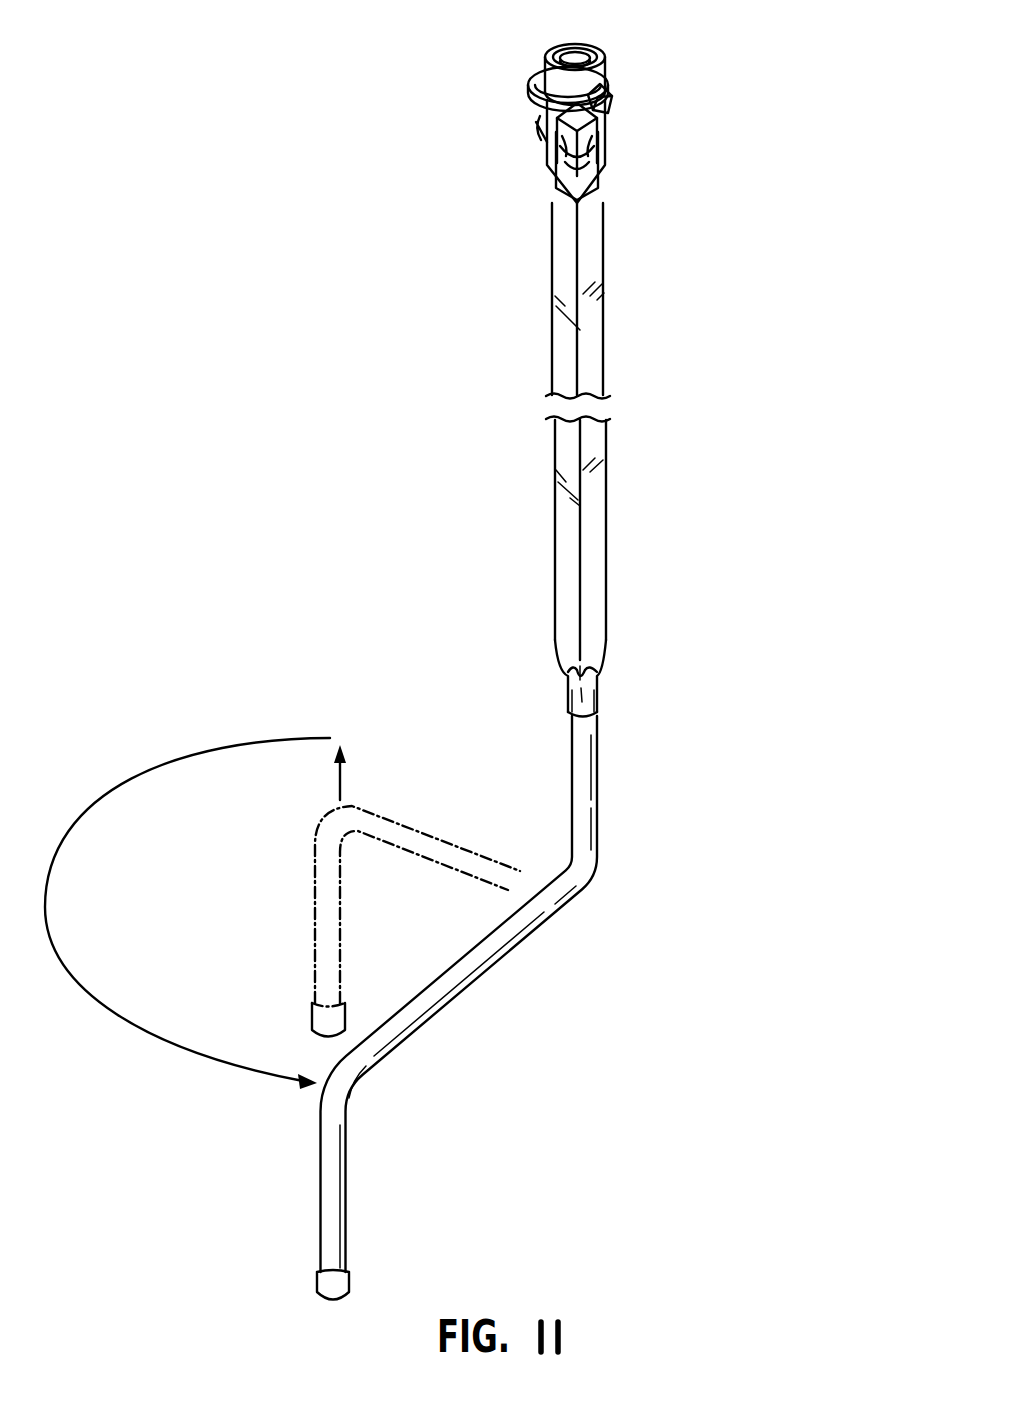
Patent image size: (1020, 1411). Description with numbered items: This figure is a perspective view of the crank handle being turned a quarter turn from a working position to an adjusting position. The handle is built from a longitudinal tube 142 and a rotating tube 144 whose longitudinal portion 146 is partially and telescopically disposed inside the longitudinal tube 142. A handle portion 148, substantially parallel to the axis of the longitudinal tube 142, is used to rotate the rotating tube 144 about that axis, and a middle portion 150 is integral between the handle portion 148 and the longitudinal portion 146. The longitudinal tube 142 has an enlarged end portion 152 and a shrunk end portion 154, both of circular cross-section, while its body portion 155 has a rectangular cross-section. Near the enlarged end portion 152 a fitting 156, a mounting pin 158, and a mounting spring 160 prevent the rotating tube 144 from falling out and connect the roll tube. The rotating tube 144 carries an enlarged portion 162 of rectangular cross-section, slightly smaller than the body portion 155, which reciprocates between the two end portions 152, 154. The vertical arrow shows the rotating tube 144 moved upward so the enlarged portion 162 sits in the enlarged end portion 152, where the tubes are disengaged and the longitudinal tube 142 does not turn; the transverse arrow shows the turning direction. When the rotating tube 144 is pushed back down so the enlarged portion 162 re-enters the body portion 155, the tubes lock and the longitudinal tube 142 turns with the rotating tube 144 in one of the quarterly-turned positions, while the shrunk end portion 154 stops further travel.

The longitudinal tube 142 is at (604, 325).
The rotating tube 144 is at (571, 177).
The longitudinal portion 146 is at (587, 770).
The handle portion 148 is at (334, 1173).
The middle portion 150 is at (432, 998).
The enlarged end portion 152 is at (601, 114).
The shrunk end portion 154 is at (600, 694).
The body portion 155 is at (597, 520).
The fitting 156 is at (577, 50).
The mounting pin 158 is at (609, 102).
The mounting spring 160 is at (528, 91).
The enlarged portion 162 is at (598, 148).